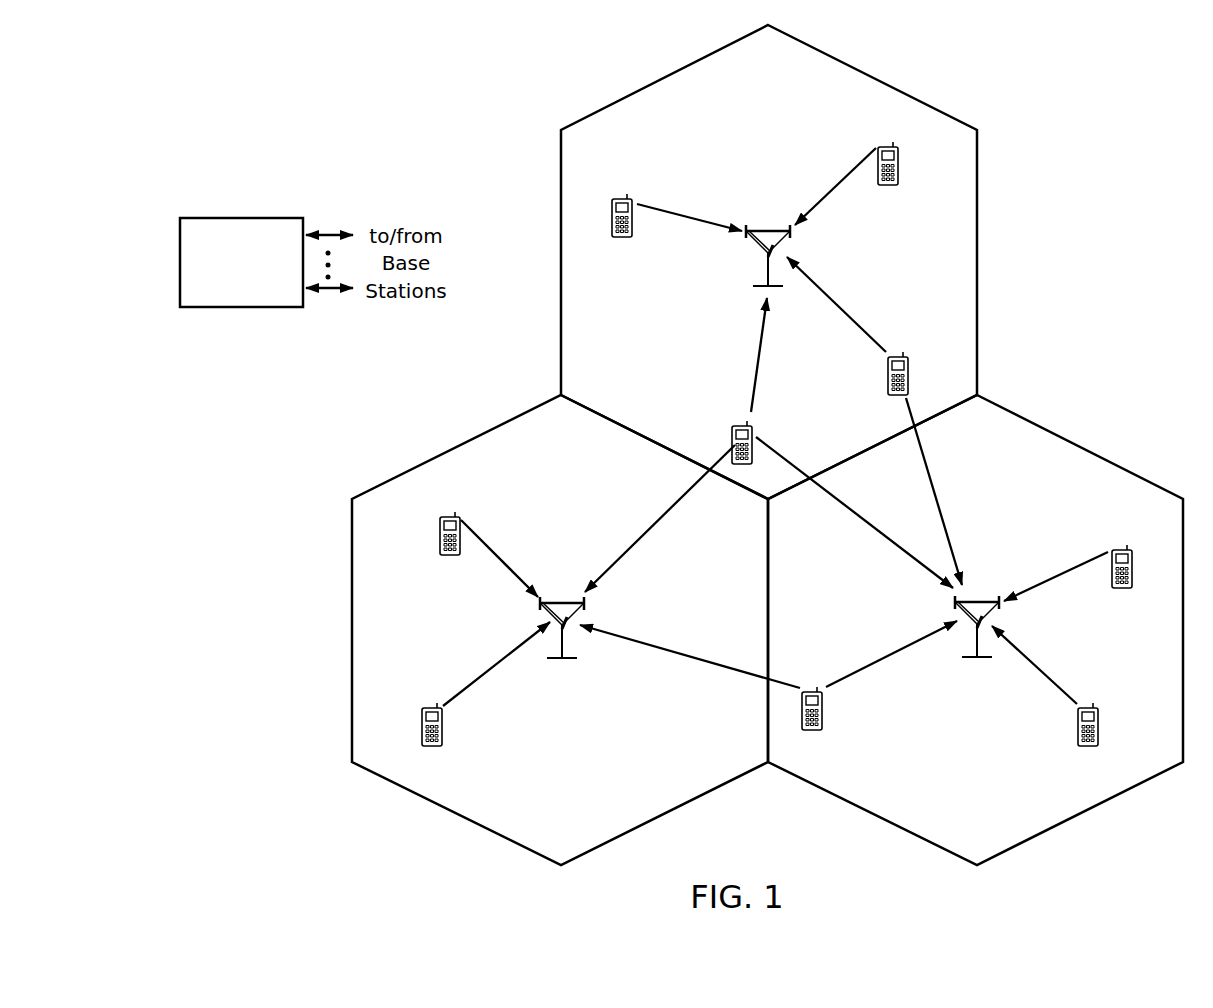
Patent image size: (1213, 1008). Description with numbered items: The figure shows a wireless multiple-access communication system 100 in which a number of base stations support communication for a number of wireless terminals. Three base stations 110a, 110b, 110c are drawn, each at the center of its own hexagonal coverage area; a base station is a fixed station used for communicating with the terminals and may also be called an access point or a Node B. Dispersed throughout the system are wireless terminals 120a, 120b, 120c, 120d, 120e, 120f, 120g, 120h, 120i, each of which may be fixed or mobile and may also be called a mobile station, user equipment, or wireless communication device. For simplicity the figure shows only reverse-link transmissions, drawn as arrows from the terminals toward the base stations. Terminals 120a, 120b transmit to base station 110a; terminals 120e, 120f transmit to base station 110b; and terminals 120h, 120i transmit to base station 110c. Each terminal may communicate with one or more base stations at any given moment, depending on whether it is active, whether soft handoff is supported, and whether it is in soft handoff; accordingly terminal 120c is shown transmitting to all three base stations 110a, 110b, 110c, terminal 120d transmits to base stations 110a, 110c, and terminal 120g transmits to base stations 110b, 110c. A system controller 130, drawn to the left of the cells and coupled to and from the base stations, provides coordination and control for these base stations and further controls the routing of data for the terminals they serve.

The wireless multiple-access communication system 100 is at (1138, 53).
The base station 110a is at (769, 228).
The base station 110b is at (564, 600).
The base station 110c is at (984, 598).
The wireless terminal 120a is at (892, 143).
The wireless terminal 120b is at (626, 195).
The wireless terminal 120c is at (746, 422).
The wireless terminal 120d is at (903, 353).
The wireless terminal 120e is at (455, 512).
The wireless terminal 120f is at (437, 703).
The wireless terminal 120g is at (817, 688).
The wireless terminal 120h is at (1093, 705).
The wireless terminal 120i is at (1127, 546).
The system controller 130 is at (243, 217).